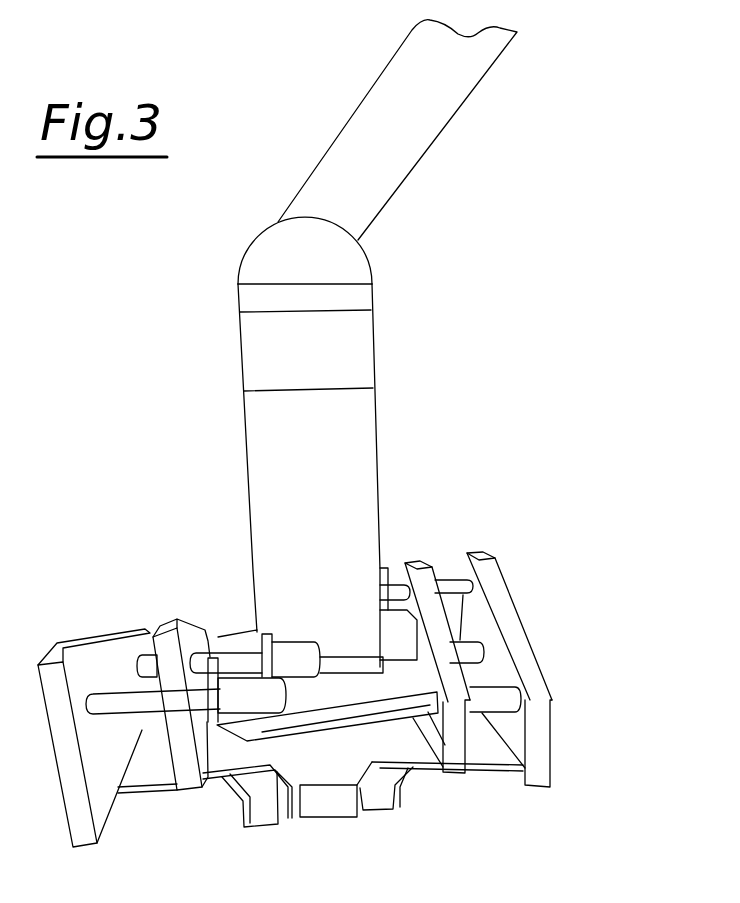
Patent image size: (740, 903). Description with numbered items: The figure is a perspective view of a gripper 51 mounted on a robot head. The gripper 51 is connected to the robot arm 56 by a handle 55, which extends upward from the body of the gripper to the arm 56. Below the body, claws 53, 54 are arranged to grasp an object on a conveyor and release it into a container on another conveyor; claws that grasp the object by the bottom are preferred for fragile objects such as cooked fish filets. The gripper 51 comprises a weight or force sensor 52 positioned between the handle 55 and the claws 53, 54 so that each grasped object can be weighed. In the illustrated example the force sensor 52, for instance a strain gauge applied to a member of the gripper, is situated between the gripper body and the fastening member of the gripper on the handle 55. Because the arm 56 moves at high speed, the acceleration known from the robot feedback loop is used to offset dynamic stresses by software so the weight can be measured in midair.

The gripper 51 is at (420, 487).
The force sensor 52 is at (323, 353).
The claw 53 is at (240, 812).
The claw 54 is at (400, 797).
The handle 55 is at (273, 257).
The arm 56 is at (398, 137).